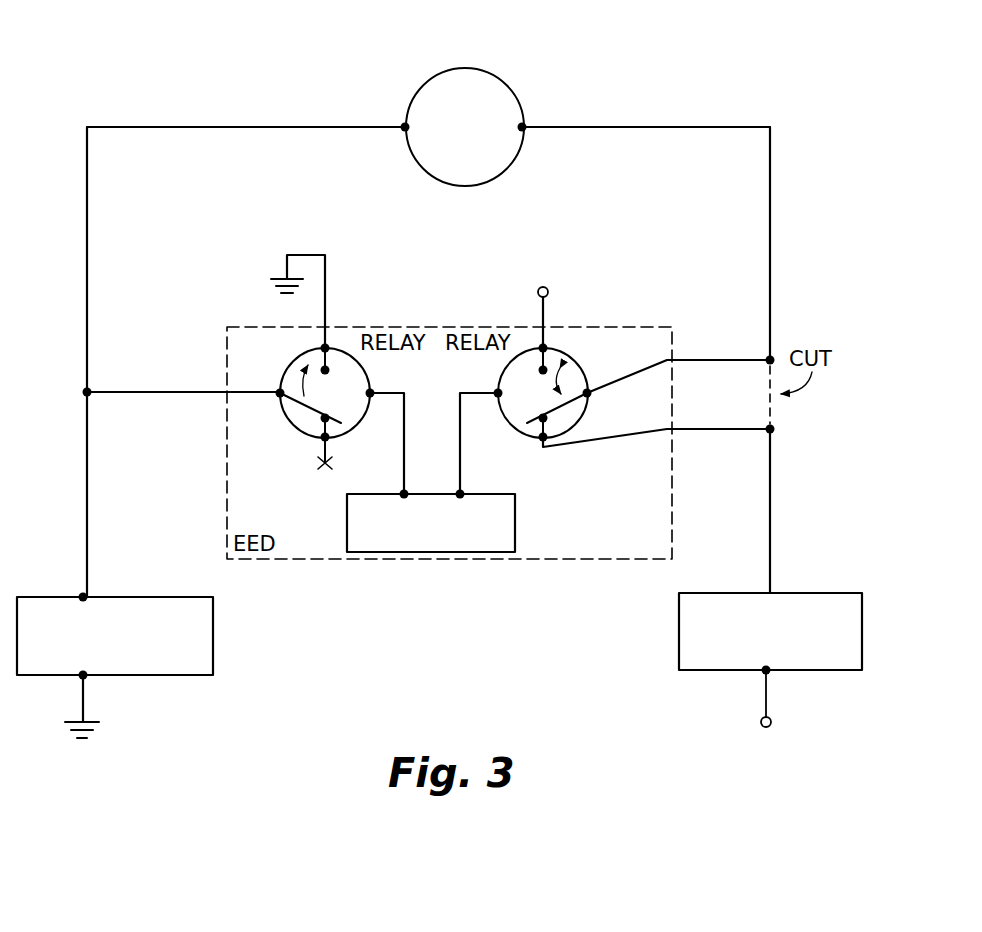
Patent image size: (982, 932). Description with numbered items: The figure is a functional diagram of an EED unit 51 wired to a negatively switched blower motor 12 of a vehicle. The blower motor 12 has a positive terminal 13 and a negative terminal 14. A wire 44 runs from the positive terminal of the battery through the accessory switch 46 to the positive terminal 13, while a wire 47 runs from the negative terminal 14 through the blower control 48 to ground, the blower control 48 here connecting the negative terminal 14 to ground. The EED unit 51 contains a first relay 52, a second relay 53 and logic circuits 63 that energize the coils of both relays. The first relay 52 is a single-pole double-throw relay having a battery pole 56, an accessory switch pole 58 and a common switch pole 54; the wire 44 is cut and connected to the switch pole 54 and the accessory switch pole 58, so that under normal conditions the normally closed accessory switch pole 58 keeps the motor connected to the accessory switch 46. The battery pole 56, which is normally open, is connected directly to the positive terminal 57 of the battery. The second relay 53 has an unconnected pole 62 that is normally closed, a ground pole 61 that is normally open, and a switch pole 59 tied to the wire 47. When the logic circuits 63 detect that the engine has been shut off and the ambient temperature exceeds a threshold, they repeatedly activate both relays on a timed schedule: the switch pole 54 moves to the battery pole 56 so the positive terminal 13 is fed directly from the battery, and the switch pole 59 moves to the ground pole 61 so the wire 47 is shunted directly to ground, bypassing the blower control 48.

The blower motor 12 is at (505, 73).
The positive terminal 13 is at (523, 128).
The negative terminal 14 is at (404, 126).
The wire 44 is at (772, 232).
The accessory switch 46 is at (815, 589).
The wire 47 is at (88, 232).
The blower control 48 is at (118, 595).
The EED unit 51 is at (621, 288).
The first relay 52 is at (578, 367).
The second relay 53 is at (292, 360).
The switch pole 54 is at (578, 399).
The battery pole 56 is at (547, 348).
The positive terminal of the battery 57 is at (539, 289).
The accessory switch pole 58 is at (540, 438).
The switch pole 59 is at (314, 411).
The ground pole 61 is at (331, 362).
The unconnected pole 62 is at (331, 438).
The logic circuits 63 is at (519, 541).